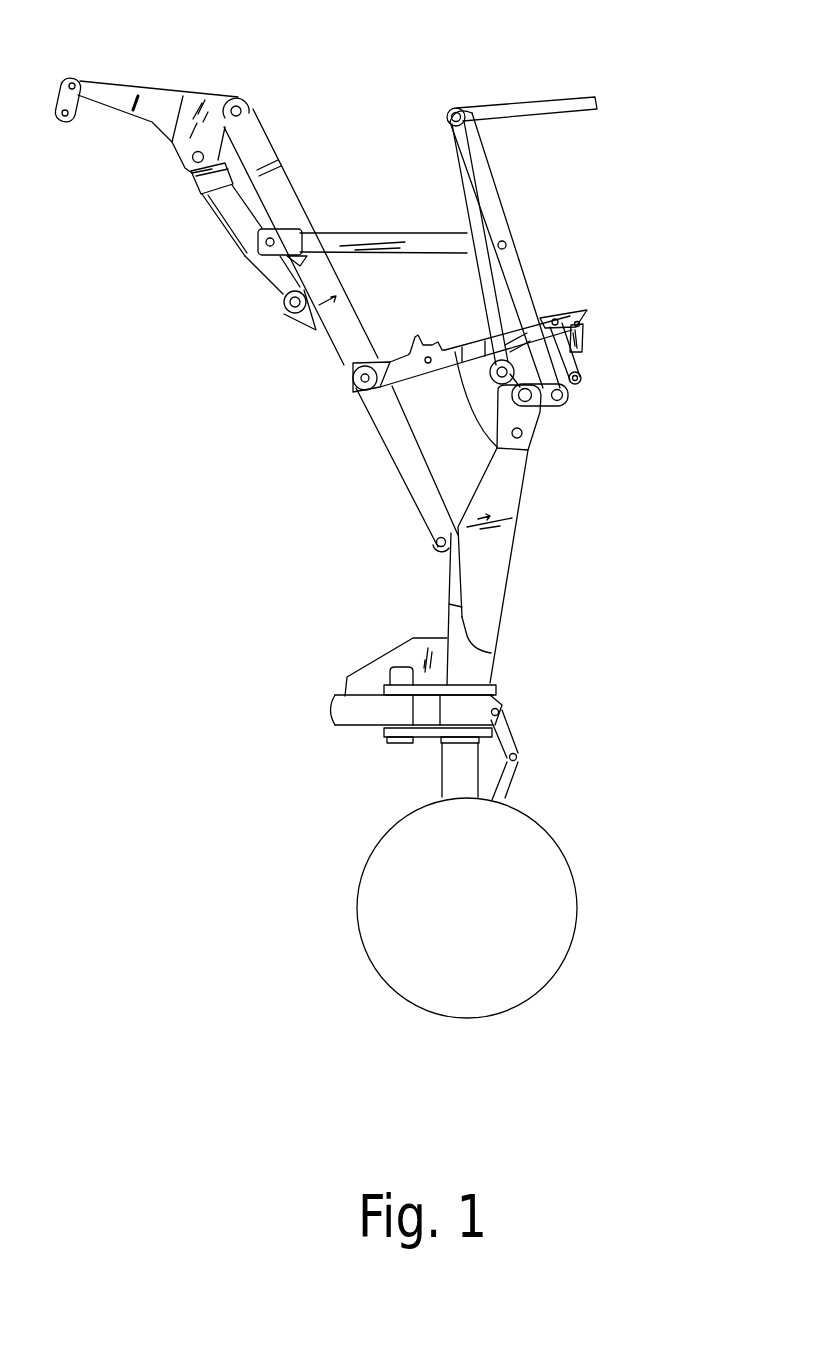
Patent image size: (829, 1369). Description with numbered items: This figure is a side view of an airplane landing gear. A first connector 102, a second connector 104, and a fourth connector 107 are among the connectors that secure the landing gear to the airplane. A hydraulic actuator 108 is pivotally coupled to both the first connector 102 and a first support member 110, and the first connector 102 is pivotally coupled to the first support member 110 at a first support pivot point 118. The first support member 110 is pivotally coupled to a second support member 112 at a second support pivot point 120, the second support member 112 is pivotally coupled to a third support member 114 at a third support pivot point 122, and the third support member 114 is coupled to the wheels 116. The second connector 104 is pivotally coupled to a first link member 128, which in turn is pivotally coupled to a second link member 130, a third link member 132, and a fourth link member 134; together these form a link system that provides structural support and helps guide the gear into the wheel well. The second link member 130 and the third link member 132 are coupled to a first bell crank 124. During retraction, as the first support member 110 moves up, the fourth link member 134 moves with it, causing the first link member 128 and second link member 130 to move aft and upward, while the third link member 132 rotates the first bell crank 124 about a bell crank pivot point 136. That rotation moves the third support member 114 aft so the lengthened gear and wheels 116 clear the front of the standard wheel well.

The first connector 102 is at (122, 93).
The second connector 104 is at (559, 100).
The fourth connector 107 is at (497, 448).
The hydraulic actuator 108 is at (232, 214).
The first support member 110 is at (337, 333).
The second support member 112 is at (403, 466).
The third support member 114 is at (480, 672).
The wheels 116 is at (545, 928).
The first support pivot point 118 is at (243, 98).
The second support pivot point 120 is at (353, 383).
The third support pivot point 122 is at (436, 549).
The first bell crank 124 is at (530, 417).
The first link member 128 is at (485, 197).
The second link member 130 is at (522, 300).
The third link member 132 is at (485, 280).
The fourth link member 134 is at (392, 243).
The bell crank pivot point 136 is at (533, 401).